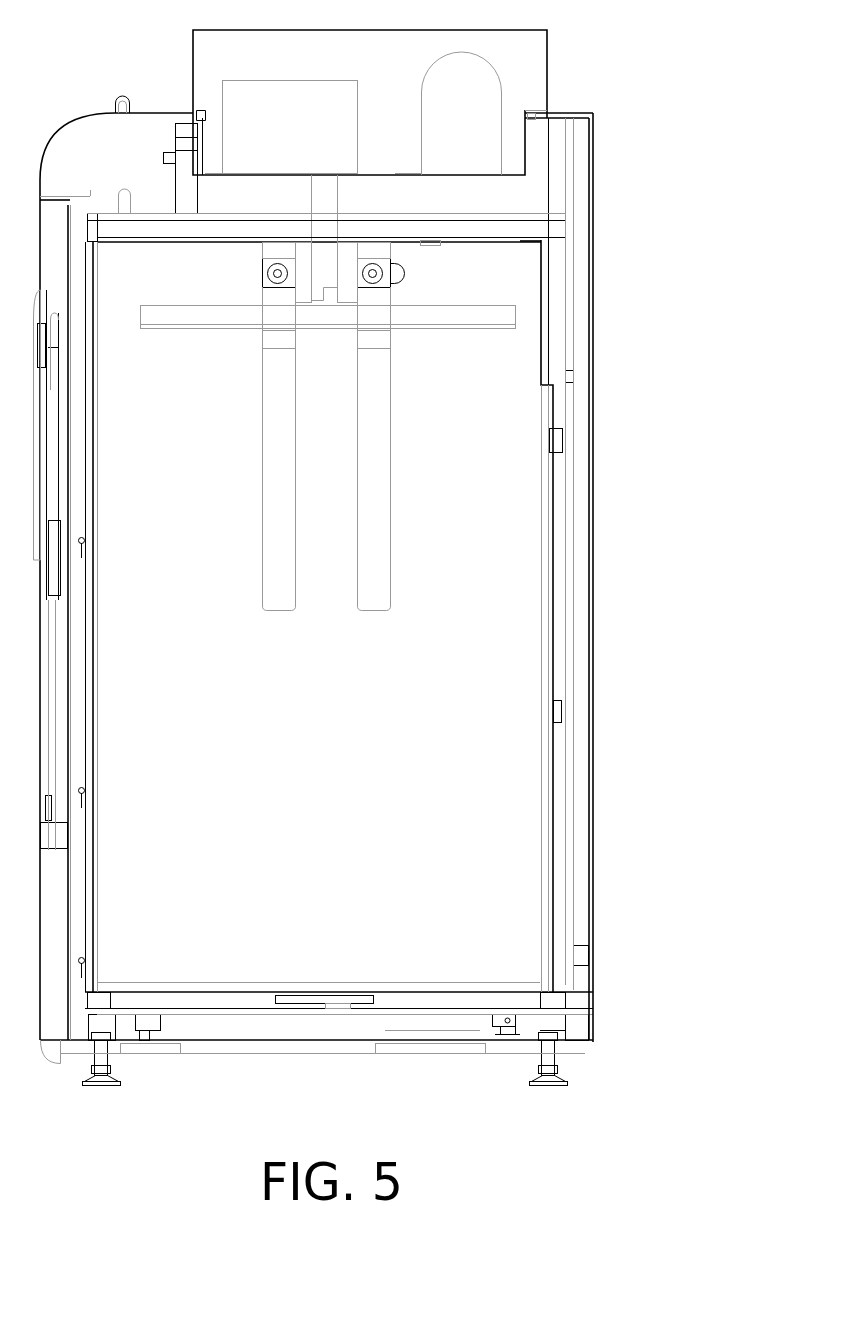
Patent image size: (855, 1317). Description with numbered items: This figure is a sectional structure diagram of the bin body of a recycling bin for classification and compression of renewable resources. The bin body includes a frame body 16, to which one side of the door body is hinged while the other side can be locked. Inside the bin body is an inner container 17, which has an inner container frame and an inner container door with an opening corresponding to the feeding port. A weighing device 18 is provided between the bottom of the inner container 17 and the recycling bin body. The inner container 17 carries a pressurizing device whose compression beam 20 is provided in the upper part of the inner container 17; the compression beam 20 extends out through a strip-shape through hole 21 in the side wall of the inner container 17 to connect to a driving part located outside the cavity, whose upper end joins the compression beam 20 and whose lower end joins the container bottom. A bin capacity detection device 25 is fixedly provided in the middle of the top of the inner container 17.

The frame body 16 is at (594, 577).
The inner container 17 is at (126, 632).
The weighing device 18 is at (362, 1052).
The compression beam 20 is at (418, 350).
The strip-shape through hole 21 is at (363, 510).
The bin capacity detection device 25 is at (381, 235).